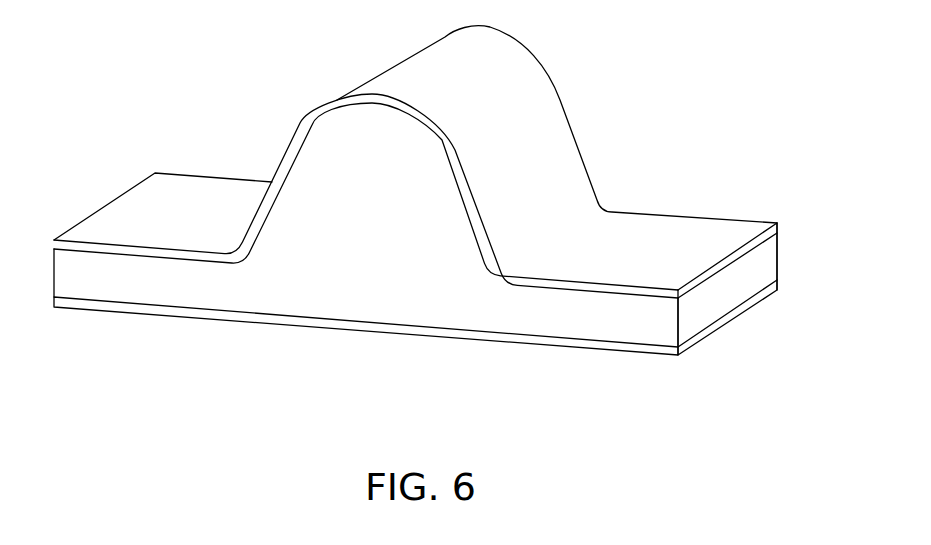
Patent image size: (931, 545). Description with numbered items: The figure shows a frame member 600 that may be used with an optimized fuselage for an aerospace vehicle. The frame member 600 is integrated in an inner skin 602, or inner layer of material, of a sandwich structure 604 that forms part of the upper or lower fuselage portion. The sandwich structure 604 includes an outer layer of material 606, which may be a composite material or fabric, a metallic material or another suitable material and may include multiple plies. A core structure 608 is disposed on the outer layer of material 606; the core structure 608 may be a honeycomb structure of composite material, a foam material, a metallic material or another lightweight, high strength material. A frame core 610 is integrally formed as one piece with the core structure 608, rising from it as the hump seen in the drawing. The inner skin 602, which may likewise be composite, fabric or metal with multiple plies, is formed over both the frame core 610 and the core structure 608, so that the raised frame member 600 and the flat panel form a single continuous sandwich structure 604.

The frame member 600 is at (459, 209).
The inner skin 602 is at (782, 229).
The sandwich structure 604 is at (790, 275).
The outer layer of material 606 is at (608, 353).
The core structure 608 is at (772, 259).
The frame core 610 is at (388, 260).